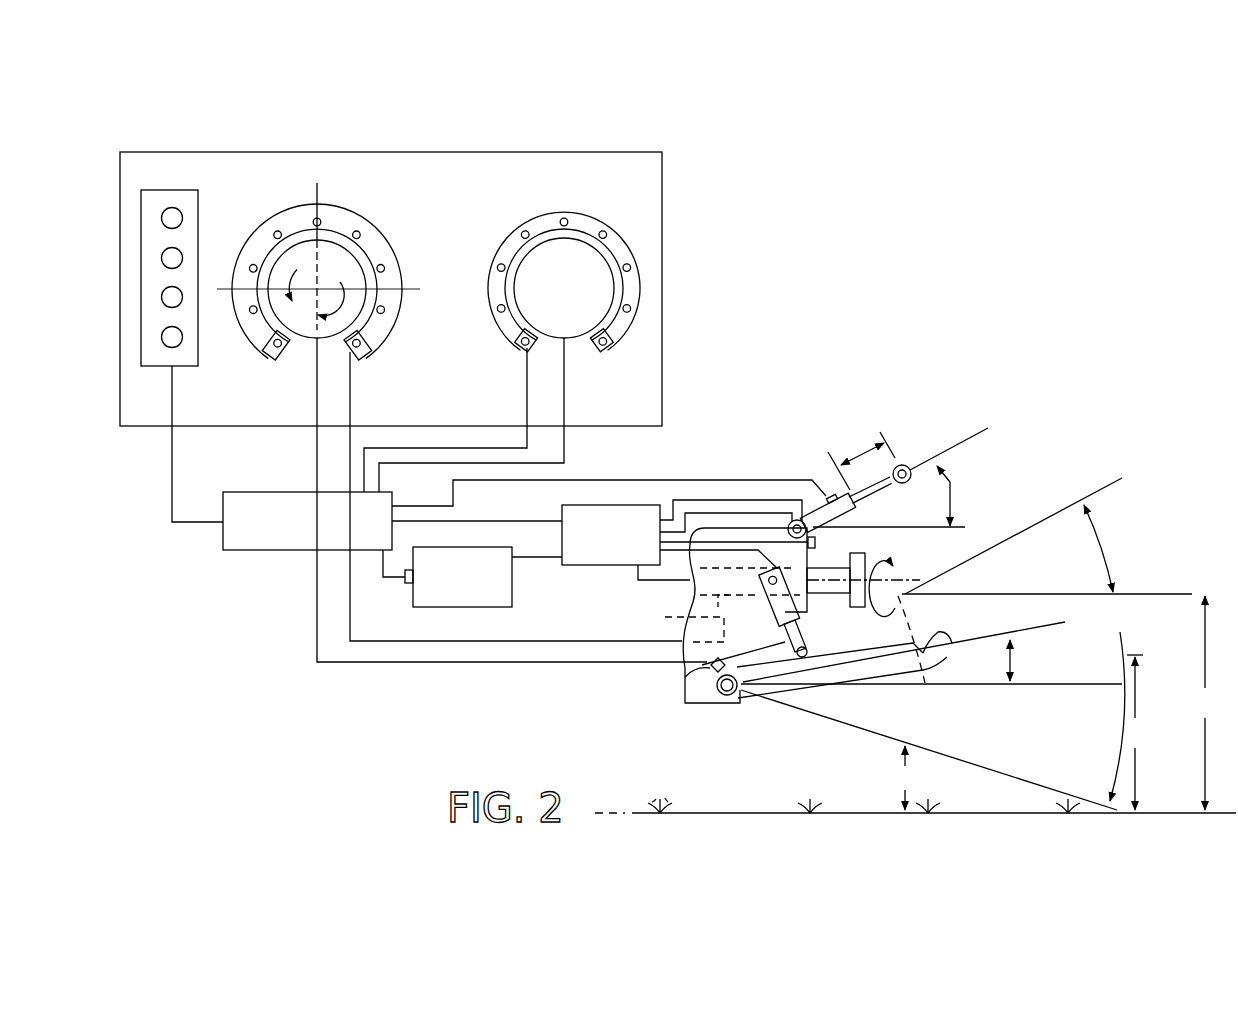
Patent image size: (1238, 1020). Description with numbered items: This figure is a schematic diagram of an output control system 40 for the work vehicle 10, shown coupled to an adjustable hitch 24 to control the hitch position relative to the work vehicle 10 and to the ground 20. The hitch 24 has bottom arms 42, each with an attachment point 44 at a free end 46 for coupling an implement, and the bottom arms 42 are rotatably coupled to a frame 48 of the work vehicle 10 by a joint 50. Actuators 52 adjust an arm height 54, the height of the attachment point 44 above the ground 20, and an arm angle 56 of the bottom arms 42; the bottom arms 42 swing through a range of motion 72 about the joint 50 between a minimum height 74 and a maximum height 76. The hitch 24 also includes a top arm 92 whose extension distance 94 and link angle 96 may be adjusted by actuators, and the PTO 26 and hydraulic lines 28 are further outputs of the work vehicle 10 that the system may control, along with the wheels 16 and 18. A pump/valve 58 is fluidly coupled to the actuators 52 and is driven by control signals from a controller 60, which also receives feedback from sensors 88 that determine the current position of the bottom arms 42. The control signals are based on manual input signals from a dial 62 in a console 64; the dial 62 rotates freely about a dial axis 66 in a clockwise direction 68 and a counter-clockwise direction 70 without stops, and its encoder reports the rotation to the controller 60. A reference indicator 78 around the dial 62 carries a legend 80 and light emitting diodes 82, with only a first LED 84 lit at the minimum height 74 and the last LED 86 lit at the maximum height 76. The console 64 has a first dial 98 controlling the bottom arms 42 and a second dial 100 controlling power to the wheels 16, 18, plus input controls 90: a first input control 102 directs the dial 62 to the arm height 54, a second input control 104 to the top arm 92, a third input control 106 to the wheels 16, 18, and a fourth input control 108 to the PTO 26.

The work vehicle 10 is at (666, 114).
The console 64 is at (392, 150).
The output control system 40 is at (678, 279).
The input controls 90 is at (172, 190).
The first input control 102 is at (161, 217).
The second input control 104 is at (161, 257).
The third input control 106 is at (161, 296).
The fourth input control 108 is at (161, 336).
The legend 80 is at (262, 233).
The reference indicator 78 is at (376, 248).
The counter-clockwise direction 70 is at (297, 270).
The dial axis 66 is at (327, 283).
The clockwise direction 68 is at (343, 303).
The light emitting diodes 82 is at (357, 231).
The first LED 84 is at (284, 368).
The last LED 86 is at (363, 355).
The dial 62 is at (516, 489).
The first dial 98 is at (307, 340).
The second dial 100 is at (578, 345).
The controller 60 is at (280, 552).
The wheel 16 is at (483, 577).
The wheel 18 is at (487, 607).
The pump/valve 58 is at (607, 565).
The sensors 88 is at (408, 585).
The extension distance 94 is at (862, 452).
The top arm 92 is at (873, 493).
The adjustable hitch 24 is at (911, 434).
The link angle 96 is at (889, 496).
The hydraulic lines 28 is at (815, 543).
The PTO 26 is at (864, 603).
The actuators 52 is at (803, 630).
The frame 48 is at (687, 692).
The joint 50 is at (715, 700).
The bottom arms 42 is at (892, 668).
The attachment point 44 is at (930, 640).
The free end 46 is at (945, 660).
The arm angle 56 is at (1012, 660).
The range of motion 72 is at (966, 639).
The minimum height 74 is at (929, 750).
The arm height 54 is at (1136, 732).
The maximum height 76 is at (1206, 703).
The ground 20 is at (990, 815).